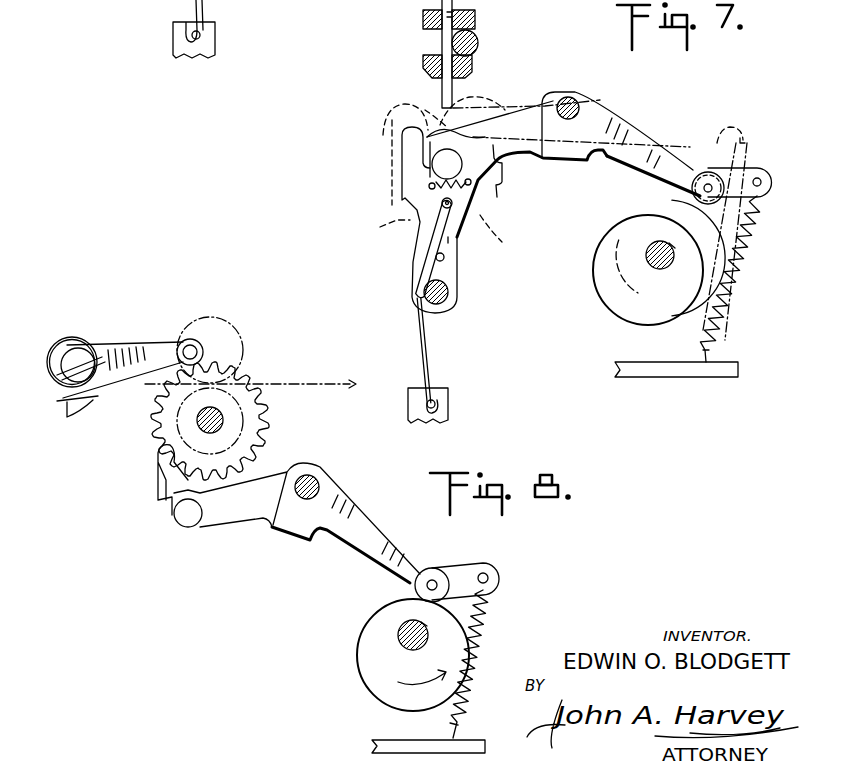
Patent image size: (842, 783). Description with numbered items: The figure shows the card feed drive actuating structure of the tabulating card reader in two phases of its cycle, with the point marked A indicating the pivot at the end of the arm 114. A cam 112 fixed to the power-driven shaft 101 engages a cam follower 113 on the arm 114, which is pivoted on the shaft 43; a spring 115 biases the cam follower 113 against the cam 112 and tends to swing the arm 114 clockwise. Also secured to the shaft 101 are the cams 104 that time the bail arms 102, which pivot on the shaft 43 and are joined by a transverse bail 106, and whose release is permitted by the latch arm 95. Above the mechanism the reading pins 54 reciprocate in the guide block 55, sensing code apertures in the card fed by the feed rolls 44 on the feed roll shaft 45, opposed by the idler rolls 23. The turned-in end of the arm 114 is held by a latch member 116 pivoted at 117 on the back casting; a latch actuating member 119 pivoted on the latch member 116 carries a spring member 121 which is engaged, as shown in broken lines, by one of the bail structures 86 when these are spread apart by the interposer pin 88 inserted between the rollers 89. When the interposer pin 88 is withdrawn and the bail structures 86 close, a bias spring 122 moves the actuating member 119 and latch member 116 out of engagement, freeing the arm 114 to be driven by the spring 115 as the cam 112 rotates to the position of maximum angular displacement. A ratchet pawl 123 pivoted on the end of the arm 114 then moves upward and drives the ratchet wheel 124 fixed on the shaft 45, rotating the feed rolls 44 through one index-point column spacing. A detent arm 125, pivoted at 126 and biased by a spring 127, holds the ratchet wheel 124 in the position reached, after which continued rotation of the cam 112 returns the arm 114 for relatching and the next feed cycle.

In FIG. 8, the idler rolls 23 is at (240, 324).
In FIG. 7, the shaft 43 is at (578, 110).
In FIG. 8, the shaft 43 is at (320, 483).
In FIG. 8, the feed rolls 44 is at (262, 414).
In FIG. 7, the feed roll shaft 45 is at (478, 42).
In FIG. 8, the feed roll shaft 45 is at (196, 418).
In FIG. 7, the reading pins 54 is at (448, 62).
In FIG. 7, the guide block 55 is at (423, 54).
In FIG. 7, the bail structures 86 is at (392, 230).
In FIG. 7, the interposer pin 88 is at (423, 108).
In FIG. 7, the rollers 89 is at (386, 118).
In FIG. 7, the latch arm 95 is at (750, 143).
In FIG. 7, the shaft 101 is at (650, 250).
In FIG. 8, the shaft 101 is at (404, 630).
In FIG. 7, the bail arms 102 is at (743, 132).
In FIG. 7, the cams 104 is at (712, 288).
In FIG. 7, the transverse bail 106 is at (518, 85).
In FIG. 7, the cam 112 is at (606, 290).
In FIG. 8, the cam 112 is at (366, 641).
In FIG. 7, the cam follower 113 is at (705, 165).
In FIG. 8, the cam follower 113 is at (436, 580).
In FIG. 7, the arm 114 is at (622, 126).
In FIG. 8, the arm 114 is at (383, 533).
In FIG. 7, the spring 115 is at (750, 215).
In FIG. 8, the spring 115 is at (489, 624).
In FIG. 7, the latch member 116 is at (393, 207).
In FIG. 7, the pivot 117 is at (450, 291).
In FIG. 7, the latch actuating member 119 is at (484, 210).
In FIG. 7, the spring member 121 is at (510, 167).
In FIG. 7, the bias spring 122 is at (432, 343).
In FIG. 8, the ratchet pawl 123 is at (156, 469).
In FIG. 8, the ratchet wheel 124 is at (262, 433).
In FIG. 8, the detent arm 125 is at (139, 349).
In FIG. 8, the pivot 126 is at (66, 384).
In FIG. 8, the spring 127 is at (64, 346).
In FIG. 7, the pivot point A is at (445, 166).
In FIG. 8, the pivot point A is at (183, 518).